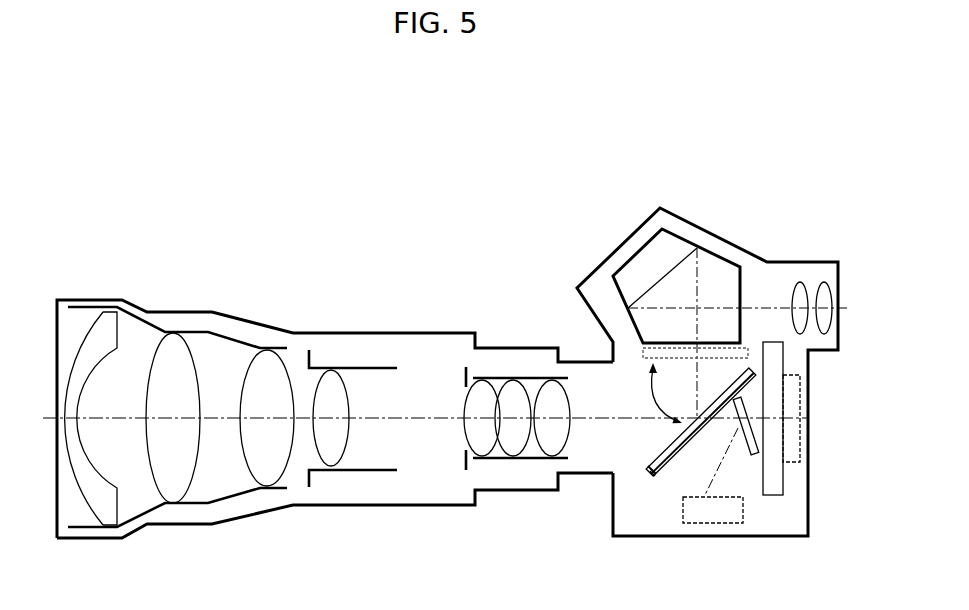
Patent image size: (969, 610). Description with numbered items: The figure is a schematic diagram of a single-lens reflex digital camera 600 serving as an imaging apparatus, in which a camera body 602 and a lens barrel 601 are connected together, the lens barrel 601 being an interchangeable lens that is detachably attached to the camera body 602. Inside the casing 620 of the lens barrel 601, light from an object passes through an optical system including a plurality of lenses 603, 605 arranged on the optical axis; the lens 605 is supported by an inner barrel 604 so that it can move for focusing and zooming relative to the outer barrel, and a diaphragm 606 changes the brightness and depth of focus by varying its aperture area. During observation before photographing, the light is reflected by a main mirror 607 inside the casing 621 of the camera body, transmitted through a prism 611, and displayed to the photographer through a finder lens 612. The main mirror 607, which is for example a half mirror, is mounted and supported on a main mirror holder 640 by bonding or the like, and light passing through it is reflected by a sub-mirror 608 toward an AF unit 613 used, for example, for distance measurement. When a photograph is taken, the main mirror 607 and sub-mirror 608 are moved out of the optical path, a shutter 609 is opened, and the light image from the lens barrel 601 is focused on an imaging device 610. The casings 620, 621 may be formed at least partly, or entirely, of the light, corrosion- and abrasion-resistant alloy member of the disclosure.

The single-lens reflex digital camera 600 is at (482, 93).
The lens barrel 601 is at (57, 139).
The camera body 602 is at (833, 139).
The lens 603 is at (110, 307).
The inner barrel 604 is at (343, 367).
The lens 605 is at (330, 452).
The diaphragm 606 is at (466, 367).
The main mirror 607 is at (652, 460).
The sub-mirror 608 is at (733, 424).
The shutter 609 is at (775, 477).
The imaging device 610 is at (792, 443).
The prism 611 is at (727, 280).
The finder lens 612 is at (825, 285).
The AF unit 613 is at (713, 523).
The casing of the lens barrel 620 is at (240, 322).
The casing of the camera body 621 is at (590, 267).
The main mirror holder 640 is at (652, 474).